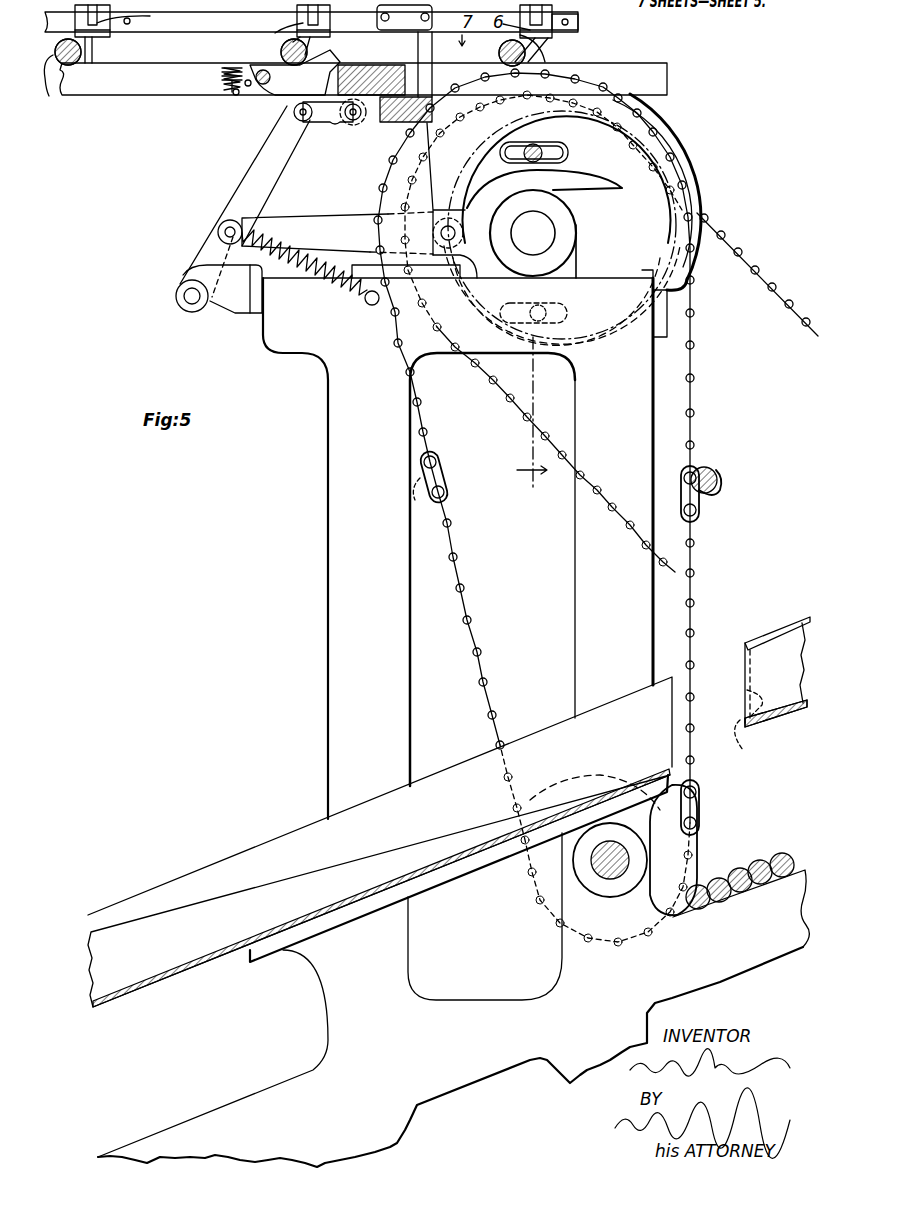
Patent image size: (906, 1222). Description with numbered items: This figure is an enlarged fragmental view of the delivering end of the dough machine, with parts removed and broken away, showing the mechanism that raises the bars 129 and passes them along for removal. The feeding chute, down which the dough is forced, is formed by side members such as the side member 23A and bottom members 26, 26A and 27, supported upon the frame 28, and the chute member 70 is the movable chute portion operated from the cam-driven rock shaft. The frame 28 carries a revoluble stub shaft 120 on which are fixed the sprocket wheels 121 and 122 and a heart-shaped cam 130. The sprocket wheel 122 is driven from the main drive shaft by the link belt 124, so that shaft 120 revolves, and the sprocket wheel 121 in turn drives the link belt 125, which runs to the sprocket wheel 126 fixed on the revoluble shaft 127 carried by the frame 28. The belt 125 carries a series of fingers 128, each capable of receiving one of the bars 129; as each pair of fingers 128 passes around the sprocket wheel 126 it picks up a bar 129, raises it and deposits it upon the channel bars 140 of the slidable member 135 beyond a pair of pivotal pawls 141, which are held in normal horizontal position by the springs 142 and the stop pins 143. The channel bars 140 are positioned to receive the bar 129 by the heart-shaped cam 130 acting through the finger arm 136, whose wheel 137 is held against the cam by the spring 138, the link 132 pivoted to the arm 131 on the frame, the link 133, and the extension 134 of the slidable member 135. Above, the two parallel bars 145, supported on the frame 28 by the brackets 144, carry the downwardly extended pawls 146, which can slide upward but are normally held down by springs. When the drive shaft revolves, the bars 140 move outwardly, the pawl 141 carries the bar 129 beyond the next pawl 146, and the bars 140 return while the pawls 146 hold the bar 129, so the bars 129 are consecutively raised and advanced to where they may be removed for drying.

The frame member 28 is at (328, 572).
The bottom member 27 is at (203, 968).
The revoluble shaft 127 is at (610, 879).
The sprocket wheel 126 is at (580, 797).
The bar 129 is at (762, 893).
The side member 23A is at (783, 628).
The bottom member 26 is at (778, 730).
The bottom member 26A is at (765, 725).
The chute member 70 is at (747, 730).
The heart-shaped cam 130 is at (570, 125).
The revoluble stub shaft 120 is at (543, 230).
The wheel 137 is at (449, 215).
The finger arm 136 is at (333, 222).
The spring 138 is at (297, 280).
The sprocket wheel 121 is at (395, 303).
The sprocket wheel 122 is at (362, 350).
The link belt 125 is at (462, 580).
The finger 128 is at (418, 480).
The link belt 124 is at (762, 280).
The channel bar 140 is at (147, 95).
The parallel bar 145 is at (168, 30).
The pivotal pawl 141 is at (92, 45).
The downwardly extended pawl 146 is at (75, 62).
The spring 142 is at (275, 35).
The stop pin 143 is at (246, 87).
The slidable member 135 is at (372, 58).
The extension 134 is at (360, 125).
The link 133 is at (327, 122).
The bracket 144 is at (410, 50).
The link 132 is at (265, 152).
The arm 131 is at (236, 315).